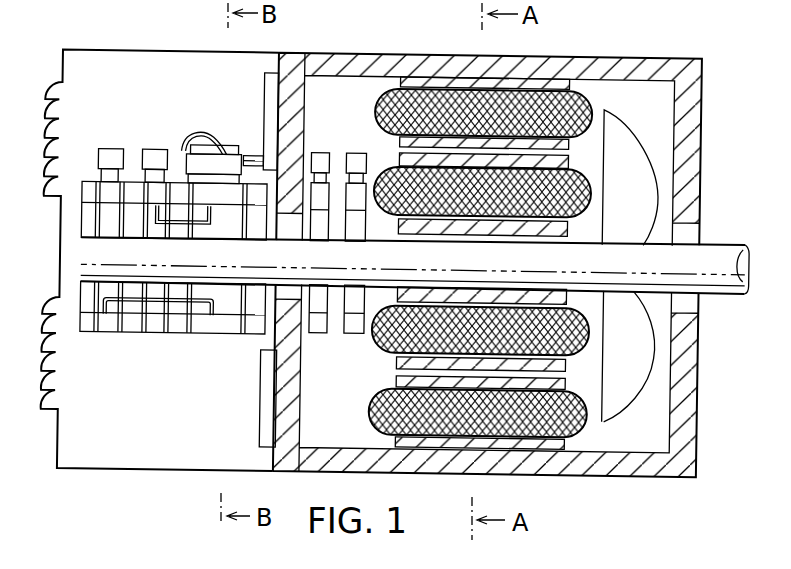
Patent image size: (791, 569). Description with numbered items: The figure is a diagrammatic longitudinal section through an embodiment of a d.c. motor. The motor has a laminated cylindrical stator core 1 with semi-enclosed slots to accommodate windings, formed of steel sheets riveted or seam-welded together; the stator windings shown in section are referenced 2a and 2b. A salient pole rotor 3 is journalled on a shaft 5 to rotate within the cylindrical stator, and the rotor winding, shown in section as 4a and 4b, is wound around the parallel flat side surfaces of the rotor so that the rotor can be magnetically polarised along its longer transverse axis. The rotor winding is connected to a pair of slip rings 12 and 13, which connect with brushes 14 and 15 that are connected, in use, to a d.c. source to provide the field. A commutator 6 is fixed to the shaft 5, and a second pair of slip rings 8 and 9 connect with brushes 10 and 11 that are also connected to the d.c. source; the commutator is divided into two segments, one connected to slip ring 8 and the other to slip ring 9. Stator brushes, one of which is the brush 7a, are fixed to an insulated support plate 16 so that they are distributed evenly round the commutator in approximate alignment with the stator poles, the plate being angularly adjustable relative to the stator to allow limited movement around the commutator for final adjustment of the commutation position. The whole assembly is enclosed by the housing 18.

The stator core 1 is at (399, 136).
The outer coil 2a is at (593, 104).
The outer coil 2b is at (590, 416).
The salient pole rotor 3 is at (567, 157).
The inner coil 4a is at (586, 205).
The inner coil 4b is at (582, 346).
The shaft 5 is at (733, 290).
The commutator 6 is at (224, 322).
The stator brush 7a is at (229, 141).
The slip ring 8 is at (117, 322).
The slip ring 9 is at (164, 322).
The brush 10 is at (113, 146).
The brush 11 is at (161, 146).
The slip ring 12 is at (325, 330).
The slip ring 13 is at (362, 330).
The brush 14 is at (317, 156).
The brush 15 is at (321, 154).
The insulated support plate 16 is at (266, 389).
The housing 18 is at (549, 56).